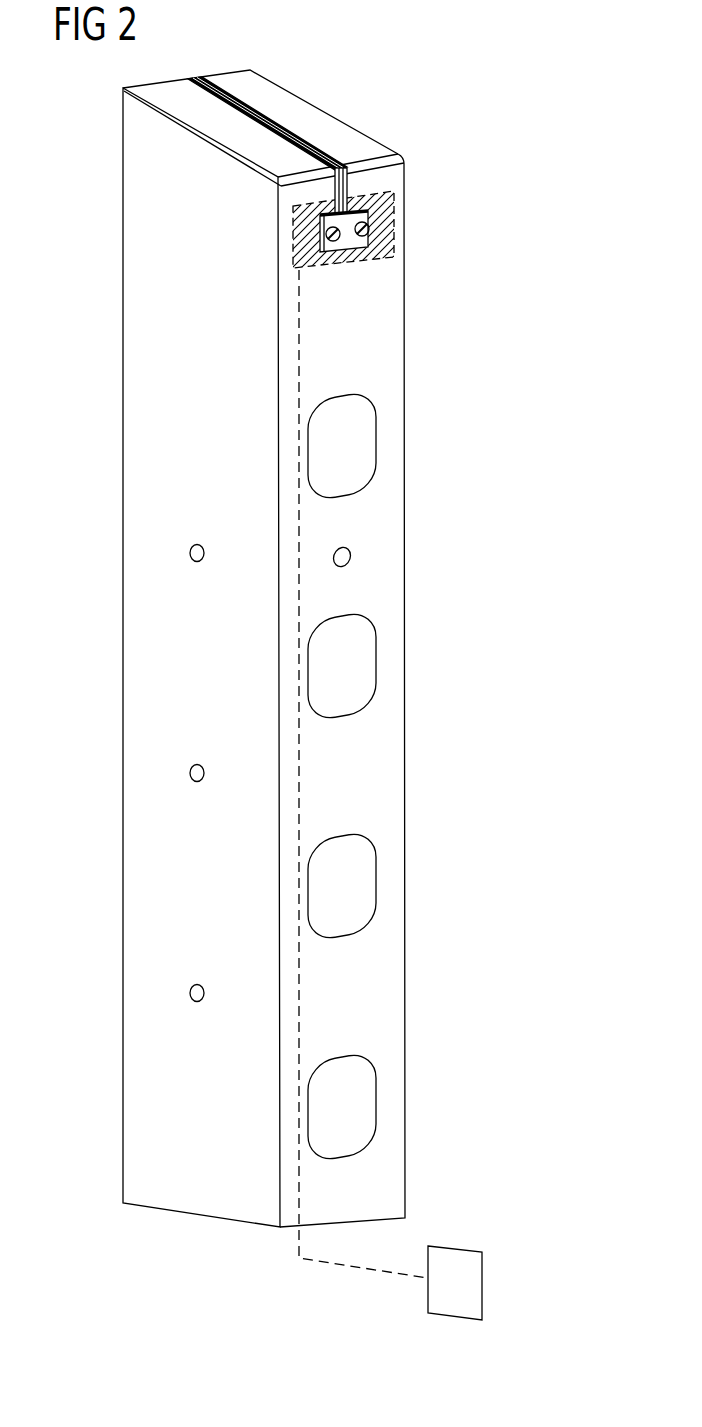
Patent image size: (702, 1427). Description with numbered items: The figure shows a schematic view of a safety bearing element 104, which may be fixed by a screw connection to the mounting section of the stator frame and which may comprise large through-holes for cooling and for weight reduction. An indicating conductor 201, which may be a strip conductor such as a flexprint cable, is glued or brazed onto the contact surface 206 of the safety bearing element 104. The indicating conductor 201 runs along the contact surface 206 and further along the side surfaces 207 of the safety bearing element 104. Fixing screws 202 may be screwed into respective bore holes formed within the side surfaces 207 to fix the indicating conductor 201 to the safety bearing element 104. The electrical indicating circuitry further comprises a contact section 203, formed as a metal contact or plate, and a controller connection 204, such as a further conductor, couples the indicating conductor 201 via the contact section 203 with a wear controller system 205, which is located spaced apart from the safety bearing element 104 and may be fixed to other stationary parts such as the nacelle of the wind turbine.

The safety bearing element 104 is at (130, 252).
The indicating conductor 201 is at (233, 98).
The fixing screws 202 is at (348, 269).
The contact section 203 is at (387, 221).
The controller connection 204 is at (298, 390).
The wear controller system 205 is at (483, 1283).
The contact surface 206 is at (323, 127).
The side surfaces 207 is at (397, 320).